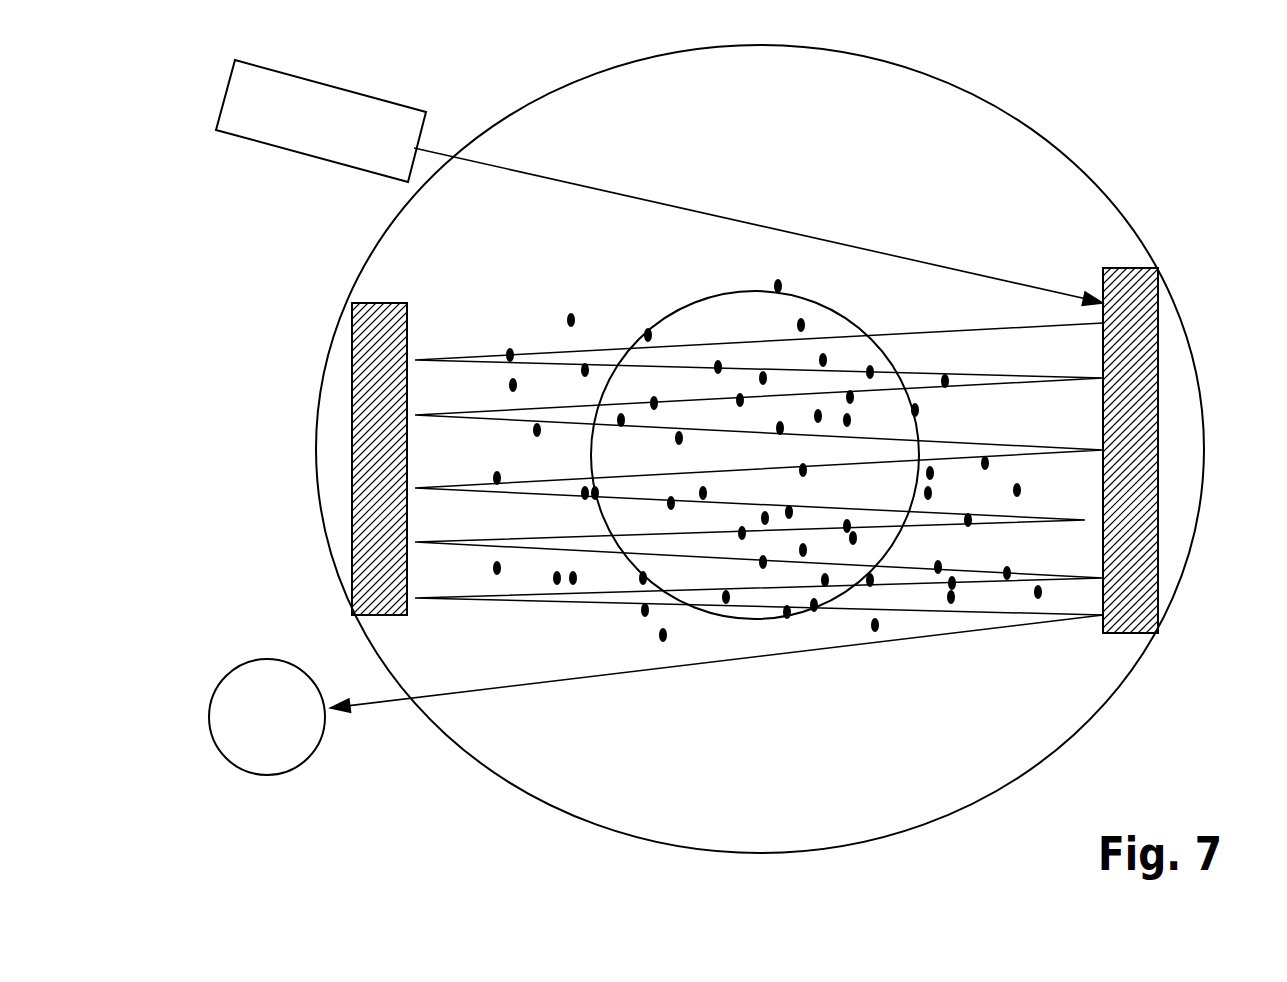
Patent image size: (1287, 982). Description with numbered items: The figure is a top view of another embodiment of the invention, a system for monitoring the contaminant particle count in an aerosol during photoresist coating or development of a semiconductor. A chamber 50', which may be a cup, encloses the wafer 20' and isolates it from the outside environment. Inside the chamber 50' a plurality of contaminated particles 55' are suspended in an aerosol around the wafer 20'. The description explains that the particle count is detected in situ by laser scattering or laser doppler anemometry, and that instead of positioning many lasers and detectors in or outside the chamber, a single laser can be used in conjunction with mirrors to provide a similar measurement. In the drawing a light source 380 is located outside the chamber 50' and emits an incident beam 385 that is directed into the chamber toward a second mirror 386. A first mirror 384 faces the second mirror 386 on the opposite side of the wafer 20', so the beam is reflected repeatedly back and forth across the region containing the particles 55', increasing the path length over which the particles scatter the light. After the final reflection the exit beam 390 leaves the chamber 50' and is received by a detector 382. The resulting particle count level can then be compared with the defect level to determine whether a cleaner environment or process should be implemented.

The chamber 50' is at (760, 449).
The light source 380 is at (334, 83).
The incident light beam 385 is at (922, 256).
The first mirror 384 is at (372, 330).
The second mirror 386 is at (1137, 300).
The exit light beam 390 is at (568, 681).
The detector 382 is at (235, 667).
The wafer 20' is at (755, 419).
The contaminated particles 55' is at (767, 460).